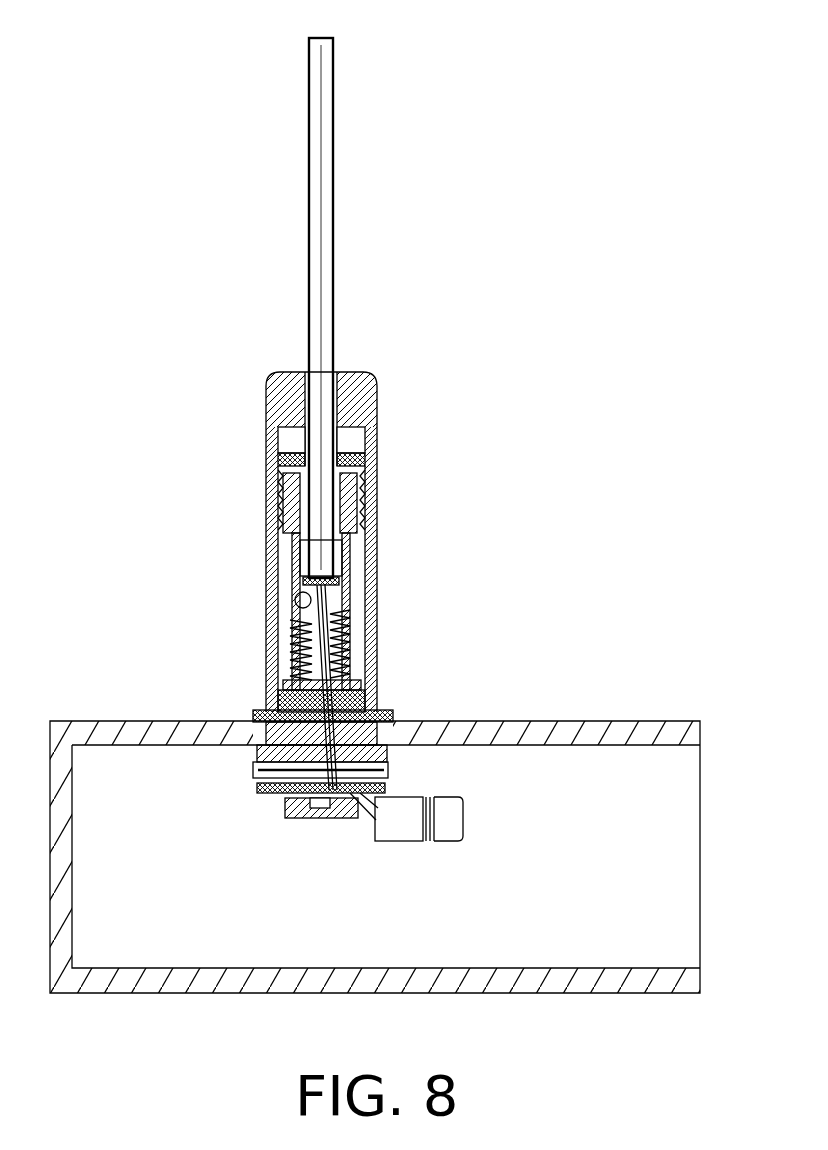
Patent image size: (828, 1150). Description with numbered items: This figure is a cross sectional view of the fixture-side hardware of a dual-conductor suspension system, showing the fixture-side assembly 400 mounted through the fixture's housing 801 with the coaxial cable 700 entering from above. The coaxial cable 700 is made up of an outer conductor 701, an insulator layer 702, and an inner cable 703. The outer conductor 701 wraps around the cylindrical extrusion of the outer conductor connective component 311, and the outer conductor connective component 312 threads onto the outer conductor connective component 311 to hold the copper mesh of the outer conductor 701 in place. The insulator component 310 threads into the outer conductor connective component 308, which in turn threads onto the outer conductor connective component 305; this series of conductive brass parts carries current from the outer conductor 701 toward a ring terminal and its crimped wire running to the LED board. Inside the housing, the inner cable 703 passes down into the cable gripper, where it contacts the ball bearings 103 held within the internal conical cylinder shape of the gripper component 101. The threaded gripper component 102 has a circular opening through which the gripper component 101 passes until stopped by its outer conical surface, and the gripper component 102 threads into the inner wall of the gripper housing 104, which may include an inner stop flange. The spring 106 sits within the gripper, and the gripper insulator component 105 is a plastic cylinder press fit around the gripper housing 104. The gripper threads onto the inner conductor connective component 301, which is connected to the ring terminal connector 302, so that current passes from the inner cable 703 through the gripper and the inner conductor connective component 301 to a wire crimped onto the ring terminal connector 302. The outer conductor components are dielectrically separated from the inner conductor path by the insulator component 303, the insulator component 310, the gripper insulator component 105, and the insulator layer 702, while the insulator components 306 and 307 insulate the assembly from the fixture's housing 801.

The fixture's housing 801 is at (590, 720).
The fixture-side assembly 400 is at (192, 405).
The coaxial cable 700 is at (370, 210).
The outer conductor 701 is at (333, 72).
The insulator layer 702 is at (318, 133).
The inner cable 703 is at (355, 668).
The outer conductor connective component 308 is at (266, 507).
The outer conductor connective component 312 is at (373, 380).
The outer conductor connective component 311 is at (362, 463).
The insulator component 310 is at (357, 493).
The gripper component 101 is at (372, 527).
The gripper component 102 is at (365, 553).
The ball bearings 103 is at (296, 596).
The gripper housing 104 is at (360, 630).
The gripper insulator component 105 is at (362, 648).
The spring 106 is at (290, 640).
The inner conductor connective component 301 is at (266, 693).
The insulator component 307 is at (252, 710).
The outer conductor connective component 305 is at (393, 728).
The insulator component 306 is at (252, 753).
The insulator component 303 is at (388, 768).
The ring terminal connector 302 is at (465, 835).